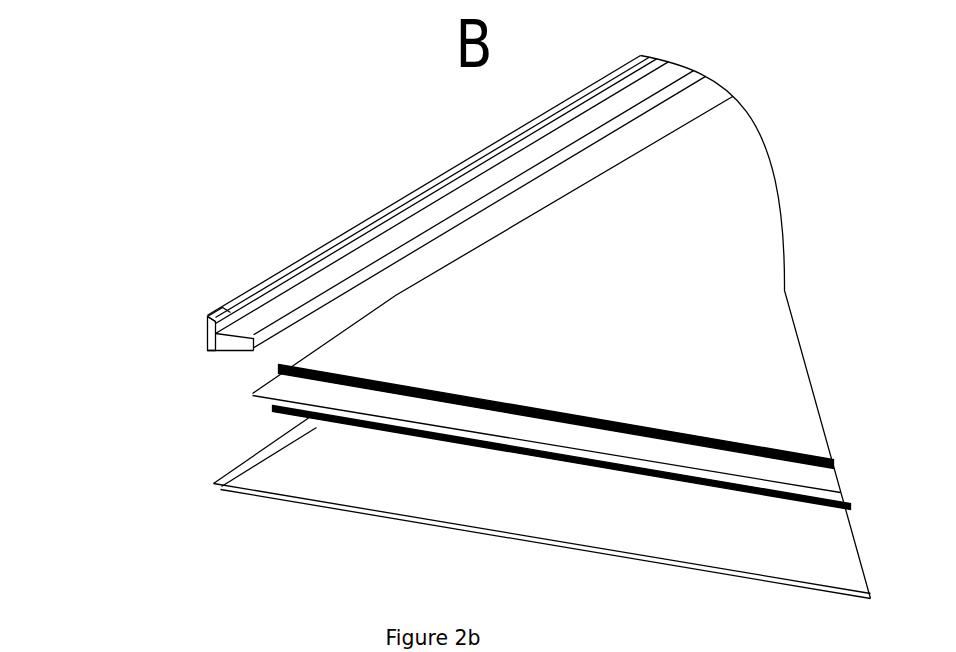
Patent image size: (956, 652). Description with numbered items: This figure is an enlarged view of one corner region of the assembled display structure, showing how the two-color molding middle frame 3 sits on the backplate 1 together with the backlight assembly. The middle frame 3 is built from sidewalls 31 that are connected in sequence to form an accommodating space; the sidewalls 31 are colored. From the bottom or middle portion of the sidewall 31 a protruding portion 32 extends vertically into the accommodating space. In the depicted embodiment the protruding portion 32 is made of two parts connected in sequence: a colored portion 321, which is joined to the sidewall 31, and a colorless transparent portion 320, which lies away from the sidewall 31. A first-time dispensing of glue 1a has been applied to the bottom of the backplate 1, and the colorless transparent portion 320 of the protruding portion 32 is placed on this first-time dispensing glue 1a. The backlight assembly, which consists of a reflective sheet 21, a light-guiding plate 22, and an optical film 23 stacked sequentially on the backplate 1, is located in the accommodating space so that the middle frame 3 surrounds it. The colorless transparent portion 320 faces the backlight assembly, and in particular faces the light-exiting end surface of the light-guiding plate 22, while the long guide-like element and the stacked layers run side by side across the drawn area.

The backplate 1 is at (327, 492).
The first-time dispensing glue 1a is at (283, 487).
The reflective sheet 21 is at (268, 410).
The light-guiding plate 22 is at (250, 398).
The optical film 23 is at (362, 348).
The two-color molding middle frame 3 is at (208, 218).
The sidewall 31 is at (205, 330).
The protruding portion 32 is at (268, 318).
The colorless transparent portion 320 is at (252, 348).
The colored portion 321 is at (207, 337).